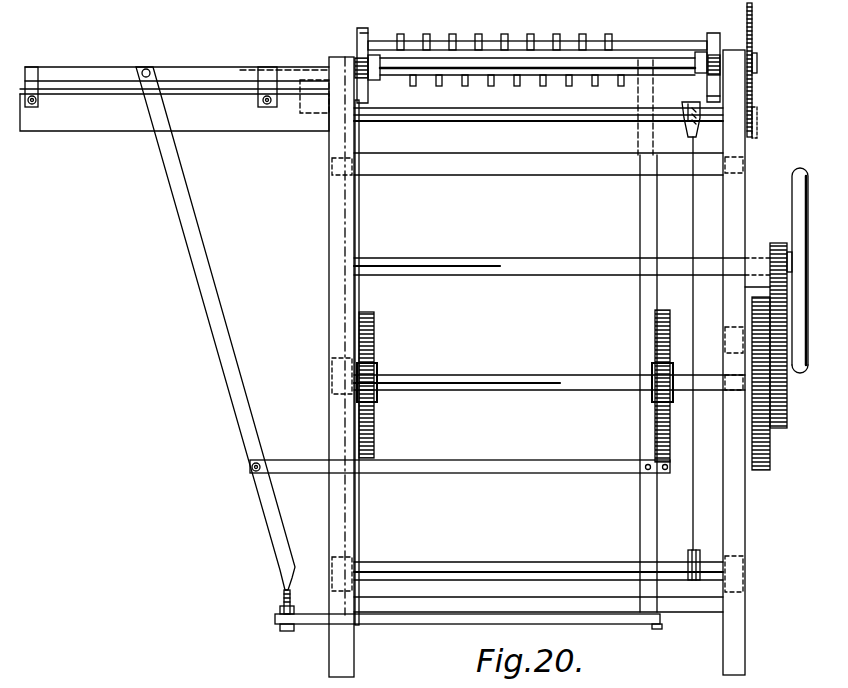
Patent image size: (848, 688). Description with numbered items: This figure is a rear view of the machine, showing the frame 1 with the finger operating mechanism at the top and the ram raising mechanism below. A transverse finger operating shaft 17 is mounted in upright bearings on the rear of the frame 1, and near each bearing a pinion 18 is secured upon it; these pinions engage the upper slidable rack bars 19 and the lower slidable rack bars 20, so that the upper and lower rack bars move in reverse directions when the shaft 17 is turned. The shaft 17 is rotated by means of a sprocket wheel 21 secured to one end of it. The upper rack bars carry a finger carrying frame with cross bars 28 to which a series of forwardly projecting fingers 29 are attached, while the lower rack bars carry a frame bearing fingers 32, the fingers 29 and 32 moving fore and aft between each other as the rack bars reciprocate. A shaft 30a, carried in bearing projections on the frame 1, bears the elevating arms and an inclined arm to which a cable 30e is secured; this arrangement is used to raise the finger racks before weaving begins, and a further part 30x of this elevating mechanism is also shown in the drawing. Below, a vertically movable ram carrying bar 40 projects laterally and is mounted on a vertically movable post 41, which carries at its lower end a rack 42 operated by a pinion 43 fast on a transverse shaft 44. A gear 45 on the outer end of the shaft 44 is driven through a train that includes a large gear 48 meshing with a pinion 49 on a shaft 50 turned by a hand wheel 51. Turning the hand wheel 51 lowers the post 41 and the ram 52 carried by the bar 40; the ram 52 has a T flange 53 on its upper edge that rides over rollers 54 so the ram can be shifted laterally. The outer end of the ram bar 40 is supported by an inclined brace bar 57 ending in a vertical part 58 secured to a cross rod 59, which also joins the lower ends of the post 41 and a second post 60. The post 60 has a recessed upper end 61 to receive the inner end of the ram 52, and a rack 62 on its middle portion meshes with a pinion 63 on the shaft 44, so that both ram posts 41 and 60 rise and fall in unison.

The frame 1 is at (328, 205).
The finger operating shaft 17 is at (660, 56).
The pinion 18 is at (356, 66).
The upper slidable rack bar 19 is at (358, 50).
The lower slidable rack bar 20 is at (366, 86).
The sprocket wheel 21 is at (753, 10).
The cross bar 28 is at (495, 40).
The finger 29 is at (425, 38).
The shaft 30a is at (602, 116).
The cable 30e is at (693, 210).
The collar on shaft 30x is at (690, 550).
The finger 32 is at (570, 86).
The ram carrying bar 40 is at (95, 78).
The vertically movable post 41 is at (361, 228).
The rack 42 is at (377, 340).
The pinion 43 is at (379, 372).
The transverse shaft 44 is at (582, 382).
The gear 45 is at (770, 464).
The large gear 48 is at (770, 287).
The pinion 49 is at (770, 245).
The shaft 50 is at (504, 262).
The hand wheel 51 is at (795, 184).
The ram 52 is at (80, 124).
The T flange 53 is at (192, 92).
The roller 54 is at (38, 95).
The inclined brace bar 57 is at (180, 200).
The vertical part 58 is at (283, 590).
The cross rod 59 is at (610, 624).
The post 60 is at (648, 520).
The upper end 61 is at (638, 92).
The rack 62 is at (672, 422).
The pinion 63 is at (674, 372).